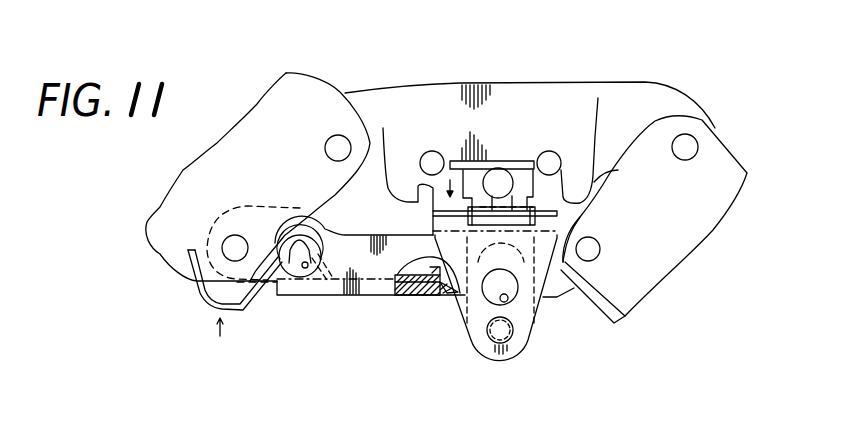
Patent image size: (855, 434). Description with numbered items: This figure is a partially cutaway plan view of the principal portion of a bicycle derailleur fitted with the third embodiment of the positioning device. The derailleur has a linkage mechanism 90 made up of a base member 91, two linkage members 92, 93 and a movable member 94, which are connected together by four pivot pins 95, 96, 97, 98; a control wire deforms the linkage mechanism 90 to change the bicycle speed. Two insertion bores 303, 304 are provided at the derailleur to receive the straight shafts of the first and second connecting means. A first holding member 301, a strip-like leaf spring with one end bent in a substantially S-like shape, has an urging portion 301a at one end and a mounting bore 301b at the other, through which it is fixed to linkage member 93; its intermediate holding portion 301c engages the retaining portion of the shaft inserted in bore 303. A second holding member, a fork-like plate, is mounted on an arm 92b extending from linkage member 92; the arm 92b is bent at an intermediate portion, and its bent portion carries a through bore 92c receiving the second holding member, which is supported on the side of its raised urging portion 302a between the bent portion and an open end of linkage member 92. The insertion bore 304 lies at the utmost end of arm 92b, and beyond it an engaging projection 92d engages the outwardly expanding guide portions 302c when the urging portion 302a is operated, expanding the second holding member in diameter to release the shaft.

The linkage mechanism 90 is at (644, 80).
The base member 91 is at (235, 126).
The linkage member 92 is at (400, 90).
The arm 92b is at (618, 312).
The through bore 92c is at (527, 217).
The engaging projection 92d is at (488, 365).
The linkage member 93 is at (361, 300).
The movable member 94 is at (728, 228).
The pivot pin 95 is at (325, 143).
The pivot pin 96 is at (228, 238).
The pivot pin 97 is at (700, 142).
The pivot pin 98 is at (601, 248).
The first holding member 301 is at (243, 322).
The urging portion 301a is at (212, 312).
The mounting bore 301b is at (458, 296).
The holding portion 301c is at (295, 258).
The urging portion 302a is at (524, 164).
The guide portion 302c is at (515, 365).
The insertion bore 303 is at (306, 270).
The insertion bore 304 is at (514, 300).